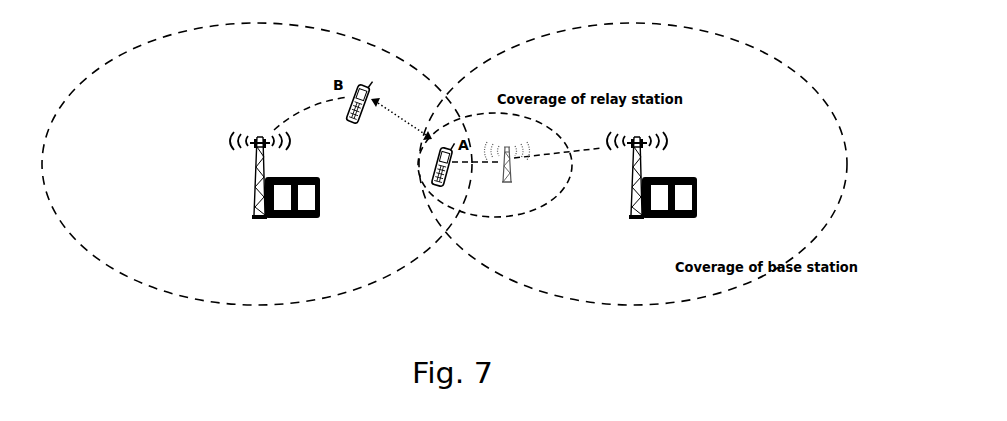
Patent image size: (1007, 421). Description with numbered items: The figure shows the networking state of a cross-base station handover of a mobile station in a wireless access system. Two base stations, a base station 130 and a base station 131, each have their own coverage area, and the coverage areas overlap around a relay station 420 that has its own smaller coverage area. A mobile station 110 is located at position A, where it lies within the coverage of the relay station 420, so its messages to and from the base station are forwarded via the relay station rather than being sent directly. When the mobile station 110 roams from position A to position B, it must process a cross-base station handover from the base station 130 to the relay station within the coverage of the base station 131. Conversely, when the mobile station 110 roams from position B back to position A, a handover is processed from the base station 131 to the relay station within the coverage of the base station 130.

The base station 131 is at (234, 175).
The base station 130 is at (703, 175).
The mobile station 110 is at (400, 156).
The relay station 420 is at (509, 182).